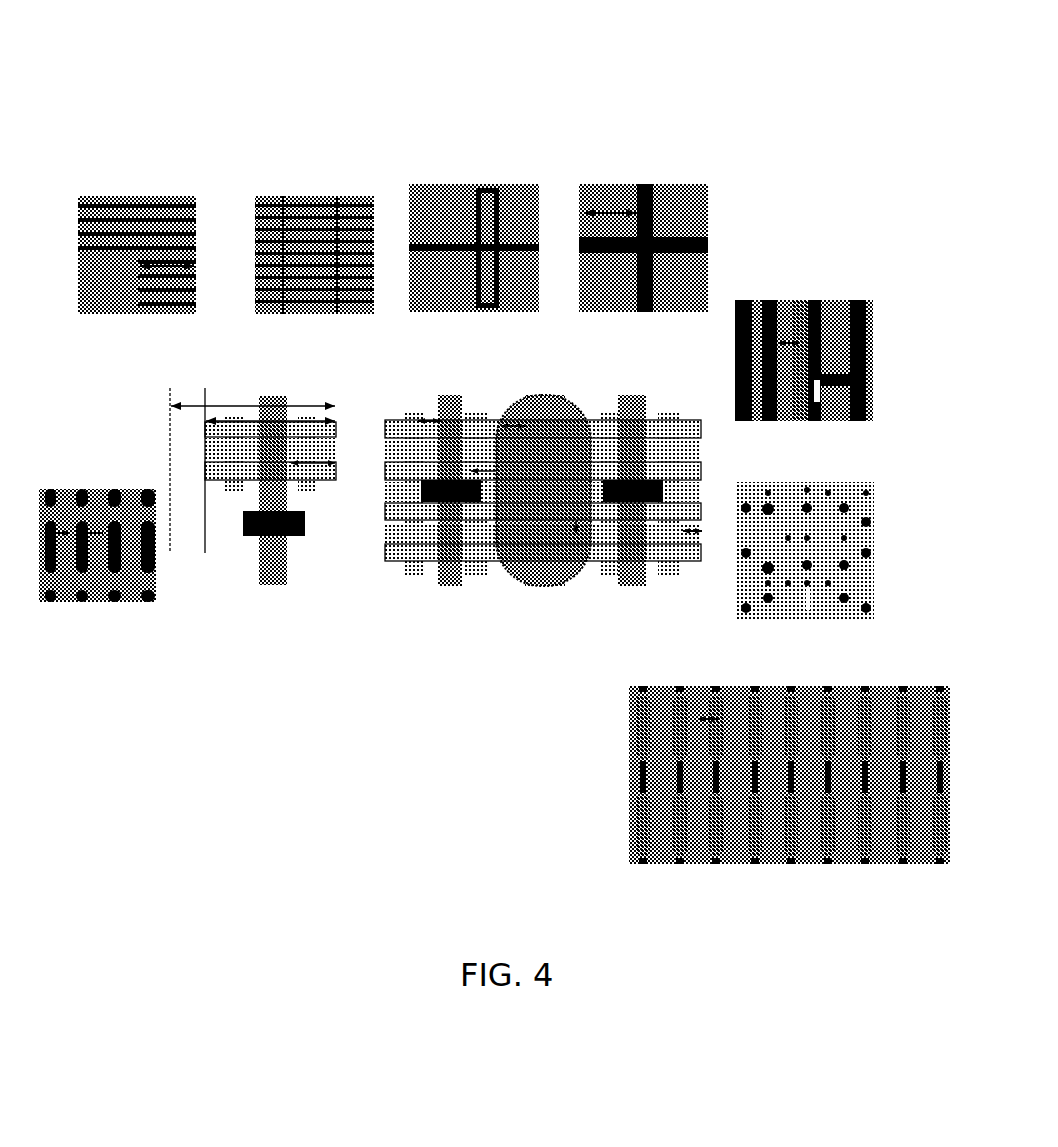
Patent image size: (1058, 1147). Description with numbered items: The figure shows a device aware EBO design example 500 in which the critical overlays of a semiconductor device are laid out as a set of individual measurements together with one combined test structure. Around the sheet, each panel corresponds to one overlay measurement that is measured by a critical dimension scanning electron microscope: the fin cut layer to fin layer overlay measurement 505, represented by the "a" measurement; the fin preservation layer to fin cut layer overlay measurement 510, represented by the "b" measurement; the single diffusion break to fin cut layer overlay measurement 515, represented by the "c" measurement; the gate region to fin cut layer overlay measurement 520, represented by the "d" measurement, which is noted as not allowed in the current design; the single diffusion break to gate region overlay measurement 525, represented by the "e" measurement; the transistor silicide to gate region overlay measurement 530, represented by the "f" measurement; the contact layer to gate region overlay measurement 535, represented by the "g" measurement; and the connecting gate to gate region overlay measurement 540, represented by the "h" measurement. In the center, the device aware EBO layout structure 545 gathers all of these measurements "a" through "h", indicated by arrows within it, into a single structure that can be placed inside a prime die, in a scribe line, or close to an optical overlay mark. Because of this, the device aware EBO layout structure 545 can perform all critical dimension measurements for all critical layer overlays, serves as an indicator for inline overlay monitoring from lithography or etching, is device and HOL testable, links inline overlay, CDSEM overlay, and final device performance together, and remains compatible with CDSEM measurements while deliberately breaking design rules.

The device aware EBO design example 500 is at (565, 37).
The fin cut layer to fin layer overlay measurement 505 is at (260, 143).
The fin preservation layer to fin cut layer overlay measurement 510 is at (572, 131).
The single diffusion break to fin cut layer overlay measurement 515 is at (44, 446).
The gate region to fin cut layer overlay measurement 520 is at (800, 122).
The single diffusion break to gate region overlay measurement 525 is at (870, 261).
The transistor silicide to gate region overlay measurement 530 is at (860, 660).
The contact layer to gate region overlay measurement 535 is at (870, 455).
The connecting gate to gate region overlay measurement 540 is at (503, 641).
The device aware EBO layout structure 545 is at (432, 360).